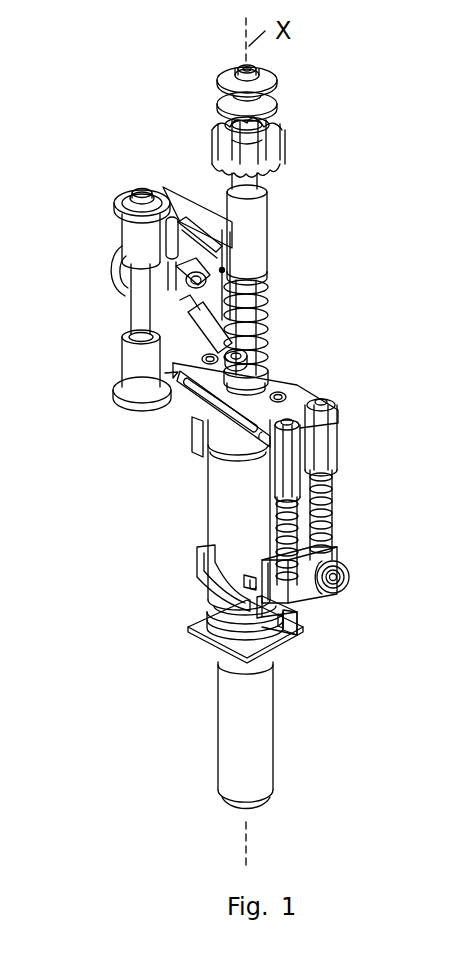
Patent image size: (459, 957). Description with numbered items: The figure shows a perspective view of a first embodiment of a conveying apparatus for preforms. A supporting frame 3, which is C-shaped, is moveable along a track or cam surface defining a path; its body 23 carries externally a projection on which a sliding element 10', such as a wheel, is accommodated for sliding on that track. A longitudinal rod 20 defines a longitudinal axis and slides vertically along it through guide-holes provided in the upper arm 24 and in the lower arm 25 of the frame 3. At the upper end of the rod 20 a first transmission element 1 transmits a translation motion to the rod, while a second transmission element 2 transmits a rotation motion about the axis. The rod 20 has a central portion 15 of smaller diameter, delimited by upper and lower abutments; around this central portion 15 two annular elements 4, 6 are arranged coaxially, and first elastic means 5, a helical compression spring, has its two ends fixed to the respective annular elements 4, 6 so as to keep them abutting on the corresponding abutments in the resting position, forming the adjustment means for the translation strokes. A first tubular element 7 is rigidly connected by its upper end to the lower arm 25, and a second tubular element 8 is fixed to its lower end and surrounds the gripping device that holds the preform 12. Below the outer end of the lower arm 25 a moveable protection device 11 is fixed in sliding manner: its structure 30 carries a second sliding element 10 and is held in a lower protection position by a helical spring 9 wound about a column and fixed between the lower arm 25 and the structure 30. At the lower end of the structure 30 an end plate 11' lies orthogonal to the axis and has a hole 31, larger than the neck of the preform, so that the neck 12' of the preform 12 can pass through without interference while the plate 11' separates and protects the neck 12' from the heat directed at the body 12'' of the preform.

The first transmission element 1 is at (225, 78).
The second transmission element 2 is at (285, 138).
The supporting frame 3 is at (118, 238).
The annular element 4 is at (270, 272).
The first elastic means 5 is at (263, 306).
The annular element 6 is at (200, 405).
The first tubular element 7 is at (218, 507).
The second tubular element 8 is at (220, 600).
The helical spring 9 is at (330, 515).
The second sliding element 10 is at (347, 602).
The sliding element 10' is at (75, 279).
The moveable protection device 11 is at (376, 554).
The end plate 11' is at (337, 657).
The preform 12 is at (189, 726).
The neck 12' is at (200, 631).
The body 12'' is at (184, 781).
The central portion 15 is at (265, 338).
The longitudinal rod 20 is at (270, 185).
The body 23 is at (167, 297).
The upper arm 24 is at (198, 212).
The lower arm 25 is at (295, 405).
The structure 30 is at (305, 622).
The hole 31 is at (285, 623).